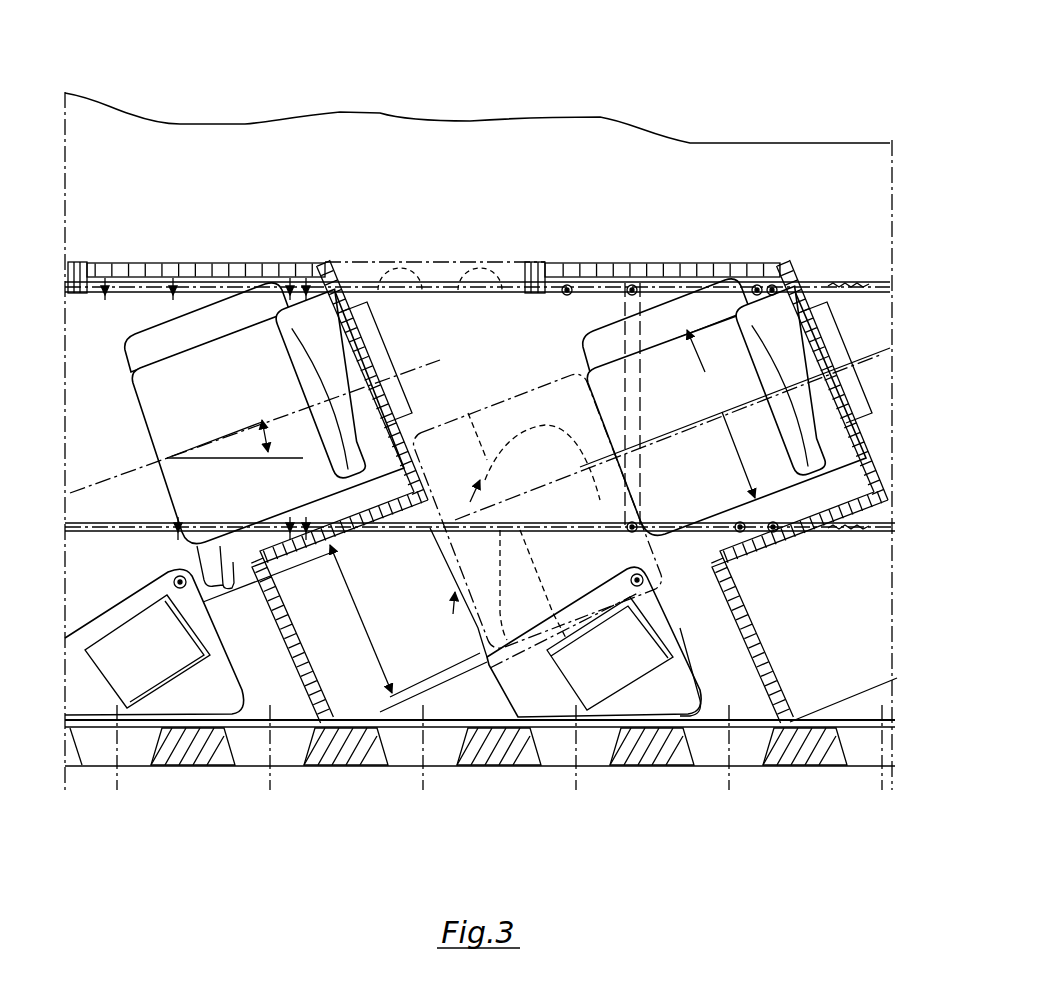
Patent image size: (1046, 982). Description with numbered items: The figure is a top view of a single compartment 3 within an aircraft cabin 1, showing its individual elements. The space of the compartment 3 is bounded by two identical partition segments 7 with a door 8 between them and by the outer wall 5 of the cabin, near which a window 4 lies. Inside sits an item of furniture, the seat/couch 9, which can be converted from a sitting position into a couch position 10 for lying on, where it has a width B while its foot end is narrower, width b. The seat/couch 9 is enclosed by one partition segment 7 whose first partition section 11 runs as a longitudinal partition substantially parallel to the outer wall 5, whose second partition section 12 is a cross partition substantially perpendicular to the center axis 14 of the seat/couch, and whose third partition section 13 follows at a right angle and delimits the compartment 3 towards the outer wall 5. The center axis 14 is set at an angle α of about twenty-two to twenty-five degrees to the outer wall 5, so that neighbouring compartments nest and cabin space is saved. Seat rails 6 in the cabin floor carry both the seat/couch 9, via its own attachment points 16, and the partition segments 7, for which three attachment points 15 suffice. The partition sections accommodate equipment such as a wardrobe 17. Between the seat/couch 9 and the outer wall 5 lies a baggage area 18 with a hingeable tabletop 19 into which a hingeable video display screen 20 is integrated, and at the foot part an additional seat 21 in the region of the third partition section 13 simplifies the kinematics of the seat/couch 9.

The cabin 1 is at (537, 72).
The compartment 3 is at (110, 322).
The window 4 is at (260, 765).
The outer wall 5 is at (500, 767).
The seat rails 6 is at (817, 283).
The partition segments 7 is at (263, 253).
The door 8 is at (403, 263).
The seat/couch 9 is at (665, 362).
The couch position 10 is at (483, 400).
The first partition section 11 is at (592, 282).
The second partition section 12 is at (813, 323).
The third partition section 13 is at (297, 568).
The center axis 14 is at (227, 430).
The attachment points 15 is at (106, 288).
The attachment points 16 is at (173, 290).
The wardrobe 17 is at (352, 318).
The baggage area 18 is at (655, 698).
The hingeable tabletop 19 is at (547, 695).
The hingeable video display screen 20 is at (602, 667).
The additional seat 21 is at (343, 768).